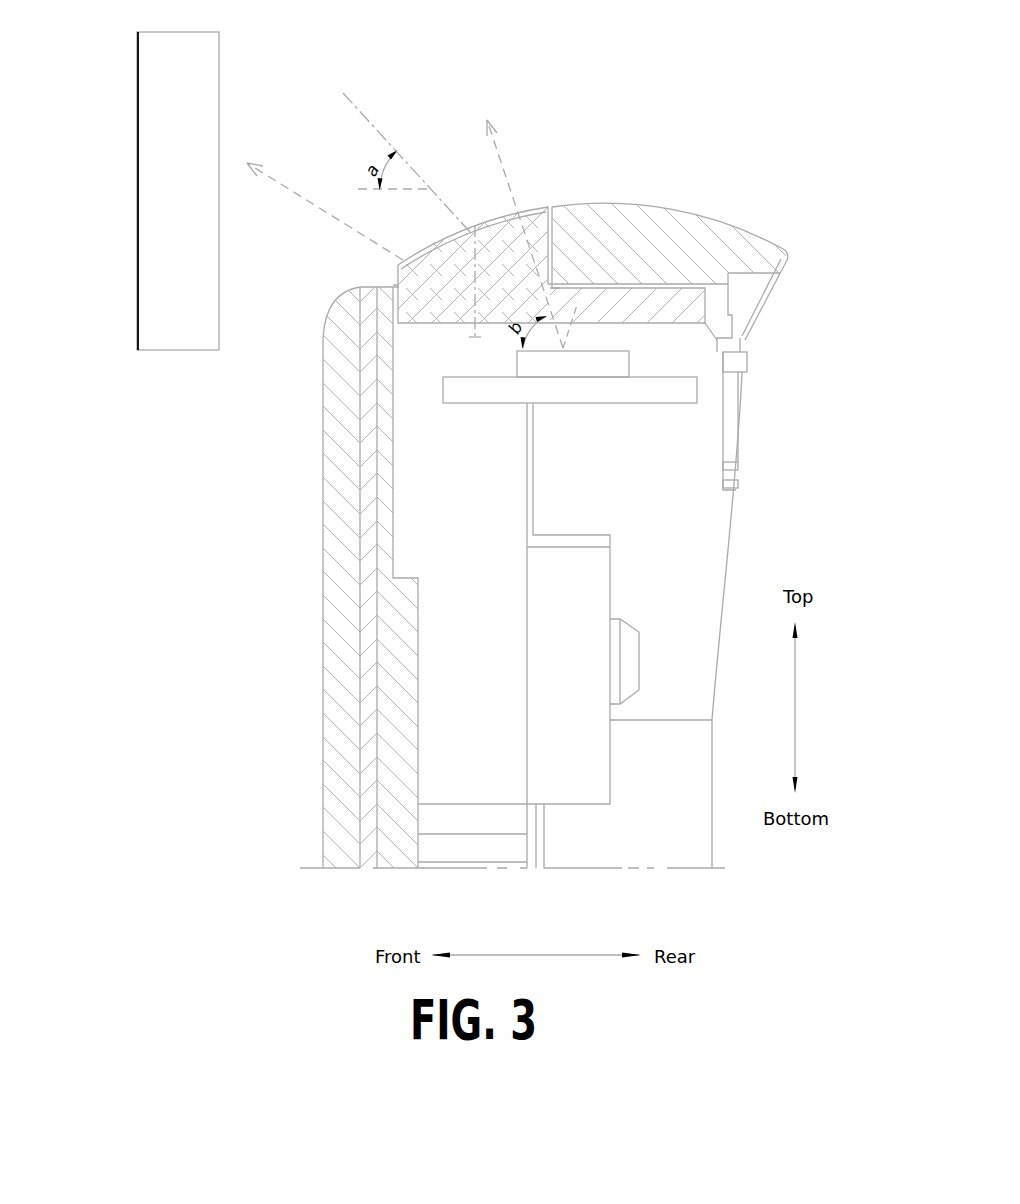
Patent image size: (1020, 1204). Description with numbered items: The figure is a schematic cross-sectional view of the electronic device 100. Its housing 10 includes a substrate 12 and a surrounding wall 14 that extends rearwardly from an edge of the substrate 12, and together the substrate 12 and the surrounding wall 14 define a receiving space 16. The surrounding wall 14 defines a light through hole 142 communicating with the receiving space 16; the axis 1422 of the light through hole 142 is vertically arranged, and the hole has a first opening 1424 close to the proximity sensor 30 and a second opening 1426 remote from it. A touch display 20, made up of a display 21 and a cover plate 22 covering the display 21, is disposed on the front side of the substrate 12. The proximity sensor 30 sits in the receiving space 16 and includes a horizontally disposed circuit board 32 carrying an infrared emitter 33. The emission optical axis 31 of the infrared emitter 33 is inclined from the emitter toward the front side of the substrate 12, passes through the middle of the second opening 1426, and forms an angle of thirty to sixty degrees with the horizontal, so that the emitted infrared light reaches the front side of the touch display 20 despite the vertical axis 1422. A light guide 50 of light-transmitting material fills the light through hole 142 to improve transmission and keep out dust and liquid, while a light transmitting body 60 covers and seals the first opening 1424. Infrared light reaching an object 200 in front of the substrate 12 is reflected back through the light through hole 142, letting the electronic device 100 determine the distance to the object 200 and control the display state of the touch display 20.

The electronic device 100 is at (908, 187).
The housing 10 is at (375, 668).
The substrate 12 is at (383, 430).
The surrounding wall 14 is at (700, 243).
The light through hole 142 is at (558, 287).
The axis 1422 is at (473, 337).
The first opening 1424 is at (572, 290).
The second opening 1426 is at (530, 211).
The receiving space 16 is at (655, 512).
The touch display 20 is at (242, 537).
The display 21 is at (368, 578).
The cover plate 22 is at (343, 525).
The proximity sensor 30 is at (828, 349).
The emission optical axis 31 is at (385, 140).
The circuit board 32 is at (683, 392).
The infrared emitter 33 is at (618, 363).
The light guide 50 is at (417, 280).
The light transmitting body 60 is at (677, 305).
The object 200 is at (157, 277).